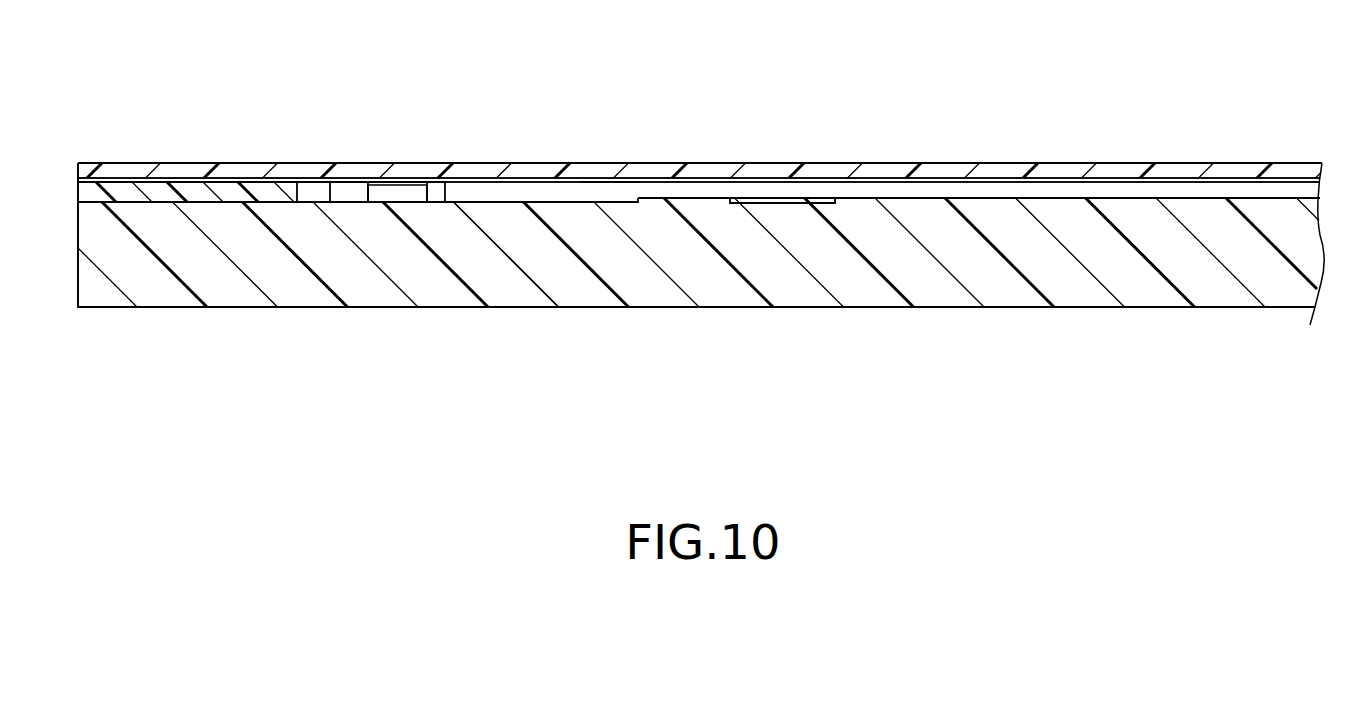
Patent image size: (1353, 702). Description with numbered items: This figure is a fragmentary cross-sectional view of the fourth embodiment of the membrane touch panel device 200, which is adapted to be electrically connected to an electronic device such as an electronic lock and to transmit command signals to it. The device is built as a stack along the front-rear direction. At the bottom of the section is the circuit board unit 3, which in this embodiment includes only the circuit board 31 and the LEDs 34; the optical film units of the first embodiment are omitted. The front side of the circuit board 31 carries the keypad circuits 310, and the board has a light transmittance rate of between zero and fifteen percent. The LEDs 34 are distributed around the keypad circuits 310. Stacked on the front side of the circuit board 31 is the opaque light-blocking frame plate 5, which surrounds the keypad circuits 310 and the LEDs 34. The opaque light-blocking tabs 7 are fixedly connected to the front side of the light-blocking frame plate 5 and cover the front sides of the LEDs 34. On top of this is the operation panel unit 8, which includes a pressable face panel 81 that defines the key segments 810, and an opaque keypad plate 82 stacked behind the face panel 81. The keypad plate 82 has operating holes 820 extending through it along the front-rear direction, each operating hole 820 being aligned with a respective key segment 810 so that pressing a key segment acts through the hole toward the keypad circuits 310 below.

The membrane touch panel device 200 is at (131, 160).
The keypad plate 82 is at (187, 182).
The light-blocking tabs 7 is at (308, 182).
The operation panel unit 8 is at (597, 160).
The face panel 81 is at (758, 176).
The key segments 810 is at (945, 170).
The light-blocking frame plate 5 is at (163, 192).
The LEDs 34 is at (392, 192).
The circuit board unit 3 is at (305, 309).
The circuit board 31 is at (532, 297).
The operating holes 820 is at (603, 181).
The keypad circuits 310 is at (900, 199).